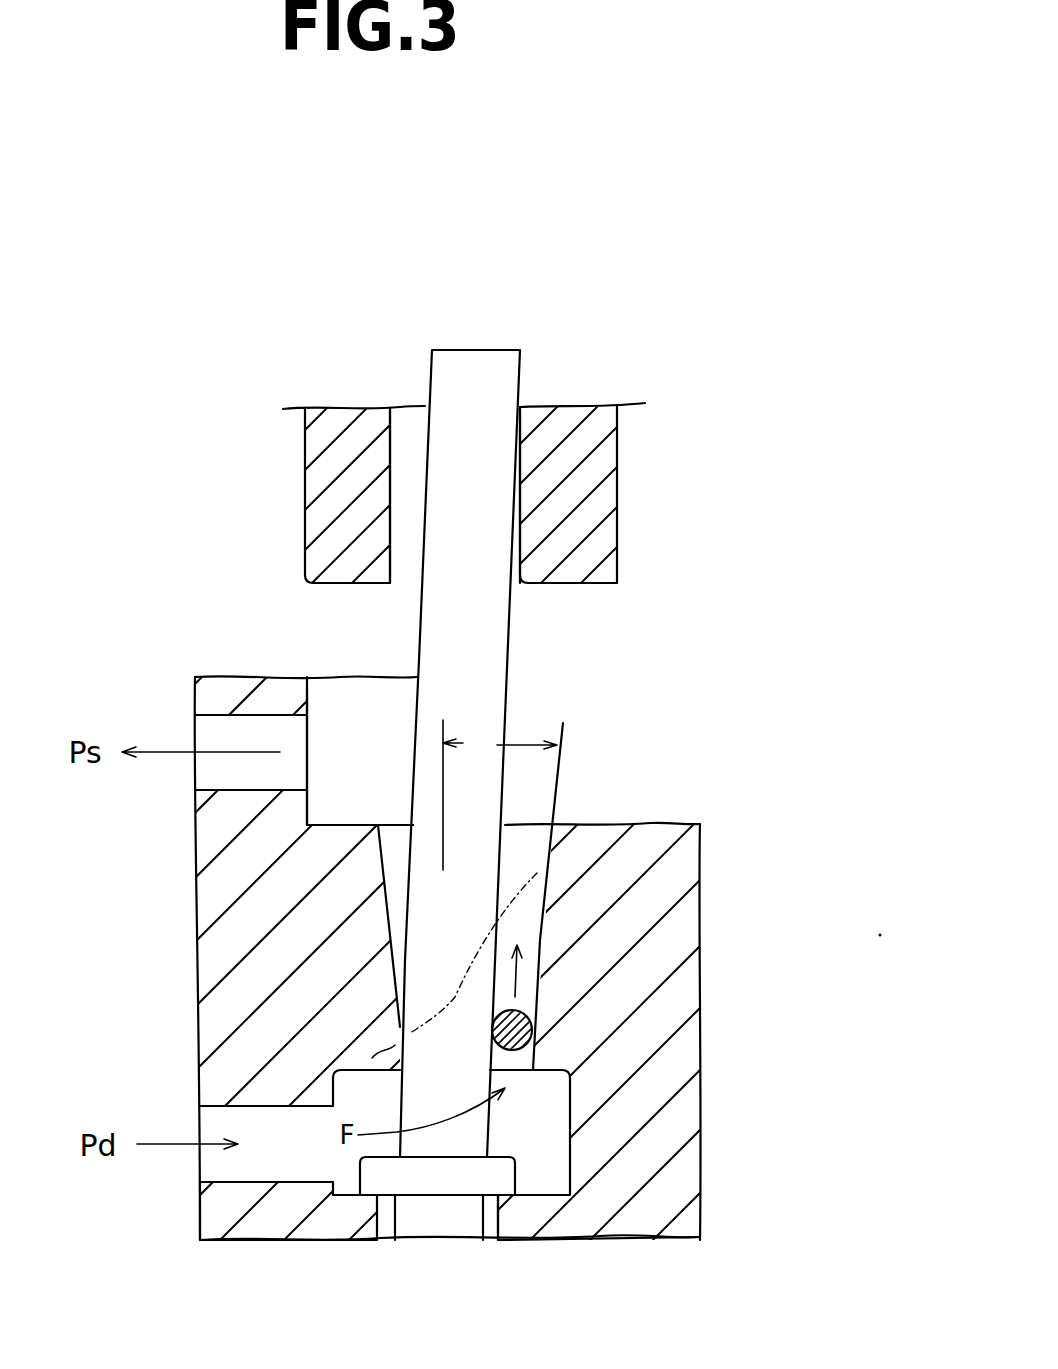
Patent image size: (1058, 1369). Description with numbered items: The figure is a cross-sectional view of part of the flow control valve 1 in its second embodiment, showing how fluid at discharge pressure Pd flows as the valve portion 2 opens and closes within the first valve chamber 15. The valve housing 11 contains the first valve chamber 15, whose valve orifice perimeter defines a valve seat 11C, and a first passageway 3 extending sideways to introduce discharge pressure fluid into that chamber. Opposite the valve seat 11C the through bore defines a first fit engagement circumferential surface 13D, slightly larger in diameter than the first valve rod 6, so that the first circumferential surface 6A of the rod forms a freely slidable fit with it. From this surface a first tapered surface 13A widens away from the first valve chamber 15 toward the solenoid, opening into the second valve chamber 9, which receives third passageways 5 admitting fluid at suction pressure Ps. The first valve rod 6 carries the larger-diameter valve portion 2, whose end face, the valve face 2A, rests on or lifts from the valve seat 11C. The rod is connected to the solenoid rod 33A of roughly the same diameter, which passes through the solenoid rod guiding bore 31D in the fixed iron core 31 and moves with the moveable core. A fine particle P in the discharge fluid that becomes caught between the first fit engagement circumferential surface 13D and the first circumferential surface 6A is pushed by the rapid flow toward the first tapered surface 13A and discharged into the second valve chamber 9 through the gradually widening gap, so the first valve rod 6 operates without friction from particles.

The flow control valve 1 is at (703, 660).
The valve portion 2 is at (427, 1190).
The valve face 2A is at (362, 1197).
The first passageway 3 is at (240, 1121).
The third passageway 5 is at (222, 765).
The first valve rod 6 is at (450, 775).
The first circumferential surface 6A is at (402, 993).
The second valve chamber 9 is at (345, 718).
The valve housing 11 is at (638, 980).
The valve seat 11C is at (503, 1192).
The first tapered surface 13A is at (550, 910).
The first fit engagement circumferential surface 13D is at (205, 1200).
The first valve chamber 15 is at (540, 1123).
The fixed iron core 31 is at (345, 535).
The solenoid rod guiding bore 31D is at (402, 492).
The solenoid rod 33A is at (474, 360).
The fine particle P is at (509, 1030).